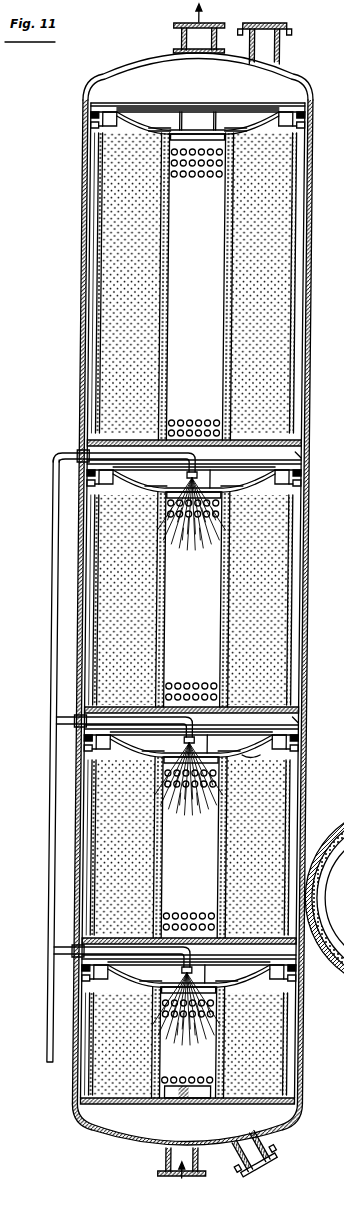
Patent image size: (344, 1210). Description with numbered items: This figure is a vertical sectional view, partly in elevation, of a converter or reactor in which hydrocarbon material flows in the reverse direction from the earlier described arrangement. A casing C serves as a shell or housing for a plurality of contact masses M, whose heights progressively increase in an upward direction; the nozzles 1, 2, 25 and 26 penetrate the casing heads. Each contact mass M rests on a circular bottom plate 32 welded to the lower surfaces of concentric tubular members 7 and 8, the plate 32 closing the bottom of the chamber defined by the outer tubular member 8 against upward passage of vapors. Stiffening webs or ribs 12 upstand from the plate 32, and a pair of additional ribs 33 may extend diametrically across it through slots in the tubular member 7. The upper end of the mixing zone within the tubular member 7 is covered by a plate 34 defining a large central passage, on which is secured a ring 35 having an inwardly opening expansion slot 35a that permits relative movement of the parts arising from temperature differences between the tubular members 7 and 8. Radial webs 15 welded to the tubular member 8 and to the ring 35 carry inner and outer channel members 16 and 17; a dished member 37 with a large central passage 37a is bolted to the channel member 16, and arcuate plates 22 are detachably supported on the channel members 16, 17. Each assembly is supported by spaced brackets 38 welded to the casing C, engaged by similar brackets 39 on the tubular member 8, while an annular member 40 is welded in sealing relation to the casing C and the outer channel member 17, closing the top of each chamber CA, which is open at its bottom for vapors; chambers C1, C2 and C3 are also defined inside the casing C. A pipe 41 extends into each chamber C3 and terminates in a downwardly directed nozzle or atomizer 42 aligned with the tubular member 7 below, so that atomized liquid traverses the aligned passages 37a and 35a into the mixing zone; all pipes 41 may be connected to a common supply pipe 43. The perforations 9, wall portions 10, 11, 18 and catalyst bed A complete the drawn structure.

The top outlet nozzle 1 is at (181, 38).
The bottom inlet nozzle 2 is at (177, 1163).
The inner tubular member 7 is at (172, 192).
The outer tubular member 8 is at (99, 203).
The perforations 9 is at (178, 172).
The central tube 10 is at (228, 231).
The basket wall 11 is at (91, 104).
The stiffening webs or ribs 12 is at (168, 414).
The webs or ribs 15 is at (100, 144).
The inner channel member 16 is at (272, 106).
The outer channel member 17 is at (122, 108).
The tray edge 18 is at (256, 756).
The arcuate plates 22 is at (162, 110).
The top side nozzle 25 is at (282, 56).
The bottom side nozzle 26 is at (276, 1147).
The bottom plate 32 is at (264, 457).
The additional stiffening webs or ribs 33 is at (213, 1104).
The plate 34 is at (152, 130).
The ring 35 is at (236, 130).
The expansion slot 35a is at (198, 128).
The dished member 37 is at (236, 118).
The central passage 37a is at (183, 118).
The brackets 38 is at (91, 128).
The brackets 39 is at (91, 116).
The annular member 40 is at (82, 464).
The pipe or conduit 41 is at (68, 456).
The nozzle or atomizer 42 is at (200, 466).
The common supply pipe 43 is at (56, 882).
The catalyst bed A is at (114, 165).
The contact mass M is at (274, 371).
The casing C is at (80, 368).
The chamber c1 C1 is at (290, 93).
The chamber c2 C2 is at (100, 1118).
The chamber c3 C3 is at (310, 458).
The chamber c4 CA is at (92, 250).